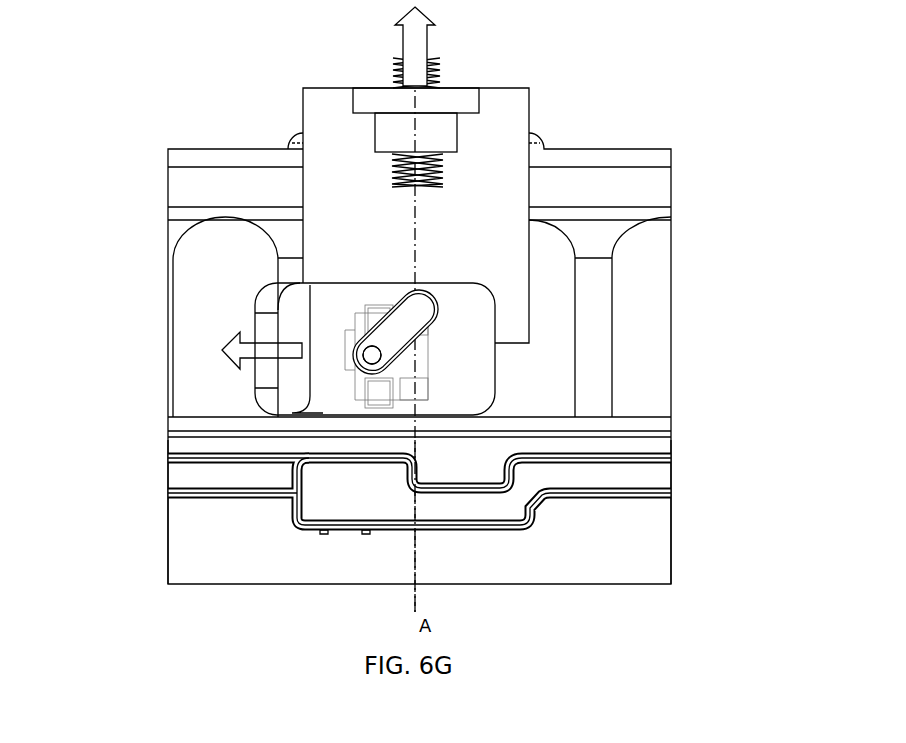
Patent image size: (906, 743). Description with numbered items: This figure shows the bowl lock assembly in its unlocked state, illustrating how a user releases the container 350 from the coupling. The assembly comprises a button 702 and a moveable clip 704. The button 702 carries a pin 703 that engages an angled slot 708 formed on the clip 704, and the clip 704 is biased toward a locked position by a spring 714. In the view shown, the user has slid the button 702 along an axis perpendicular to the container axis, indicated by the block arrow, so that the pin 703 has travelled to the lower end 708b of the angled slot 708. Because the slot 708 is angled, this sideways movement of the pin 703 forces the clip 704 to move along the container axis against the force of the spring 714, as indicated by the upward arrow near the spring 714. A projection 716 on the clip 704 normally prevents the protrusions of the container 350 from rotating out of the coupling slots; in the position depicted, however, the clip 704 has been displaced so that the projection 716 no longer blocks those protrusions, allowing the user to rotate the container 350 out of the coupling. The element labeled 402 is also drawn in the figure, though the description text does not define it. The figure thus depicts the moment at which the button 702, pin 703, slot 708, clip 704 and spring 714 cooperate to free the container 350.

The container 350 is at (223, 550).
The spring clip 402 is at (333, 502).
The button 702 is at (323, 413).
The pin 703 is at (400, 352).
The clip 704 is at (480, 138).
The angled slot 708 is at (398, 298).
The lower end of the angled slot 708b is at (360, 354).
The spring 714 is at (440, 66).
The projection 716 is at (403, 390).